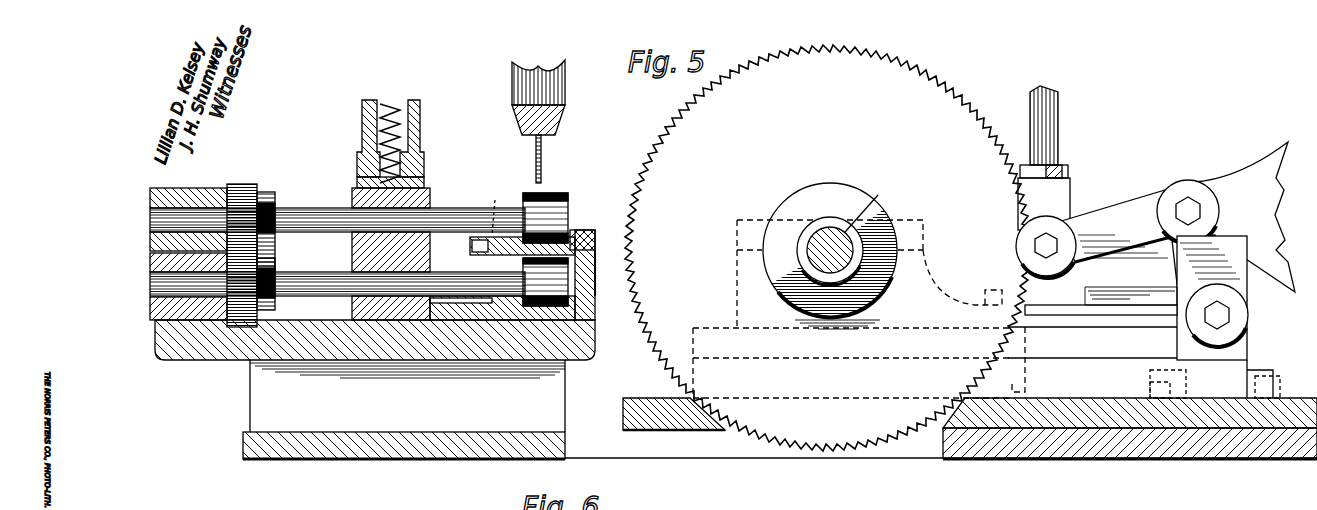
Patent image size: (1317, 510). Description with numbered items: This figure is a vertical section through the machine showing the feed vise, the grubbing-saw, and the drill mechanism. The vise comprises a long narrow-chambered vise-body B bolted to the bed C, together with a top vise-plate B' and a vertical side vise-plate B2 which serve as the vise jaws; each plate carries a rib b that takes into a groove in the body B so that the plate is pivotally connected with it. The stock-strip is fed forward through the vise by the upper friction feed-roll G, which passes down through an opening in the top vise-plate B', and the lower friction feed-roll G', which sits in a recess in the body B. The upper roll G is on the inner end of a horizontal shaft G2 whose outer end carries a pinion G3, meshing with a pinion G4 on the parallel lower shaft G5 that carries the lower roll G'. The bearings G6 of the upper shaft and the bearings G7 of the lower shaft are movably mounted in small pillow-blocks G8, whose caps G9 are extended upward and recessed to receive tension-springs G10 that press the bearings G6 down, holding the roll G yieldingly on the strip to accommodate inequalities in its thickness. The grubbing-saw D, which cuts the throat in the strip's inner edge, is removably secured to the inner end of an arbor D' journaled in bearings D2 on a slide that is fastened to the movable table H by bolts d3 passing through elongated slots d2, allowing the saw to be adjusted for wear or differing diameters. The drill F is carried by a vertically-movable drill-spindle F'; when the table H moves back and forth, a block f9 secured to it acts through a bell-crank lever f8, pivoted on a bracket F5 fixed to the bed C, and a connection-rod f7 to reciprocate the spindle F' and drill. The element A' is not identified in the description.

The casing A' is at (389, 293).
The rib b is at (475, 245).
The vise-body B is at (502, 286).
The top vise-plate B' is at (501, 206).
The side vise-plate B2 is at (596, 275).
The bed C is at (404, 409).
The grubbing-saw D is at (828, 248).
The arbor D' is at (850, 224).
The bearings D2 is at (847, 244).
The drill F is at (551, 159).
The drill-spindle F' is at (552, 97).
The bracket F5 is at (1245, 217).
The upper friction feed-roll G is at (545, 218).
The lower friction feed-roll G' is at (545, 282).
The upper shaft G2 is at (448, 210).
The pinion G3 is at (240, 186).
The pinion G4 is at (285, 272).
The lower shaft G5 is at (330, 278).
The bearings of upper shaft G6 is at (190, 196).
The bearings of lower shaft G7 is at (155, 262).
The pillow-blocks G8 is at (355, 195).
The caps G9 is at (420, 108).
The tension-springs G10 is at (420, 134).
The movable table H is at (1094, 410).
The elongated slots d2 is at (1048, 310).
The bolts d3 is at (1012, 350).
The connection-rod f7 is at (1058, 130).
The bell-crank lever f8 is at (1245, 270).
The block f9 is at (1245, 336).